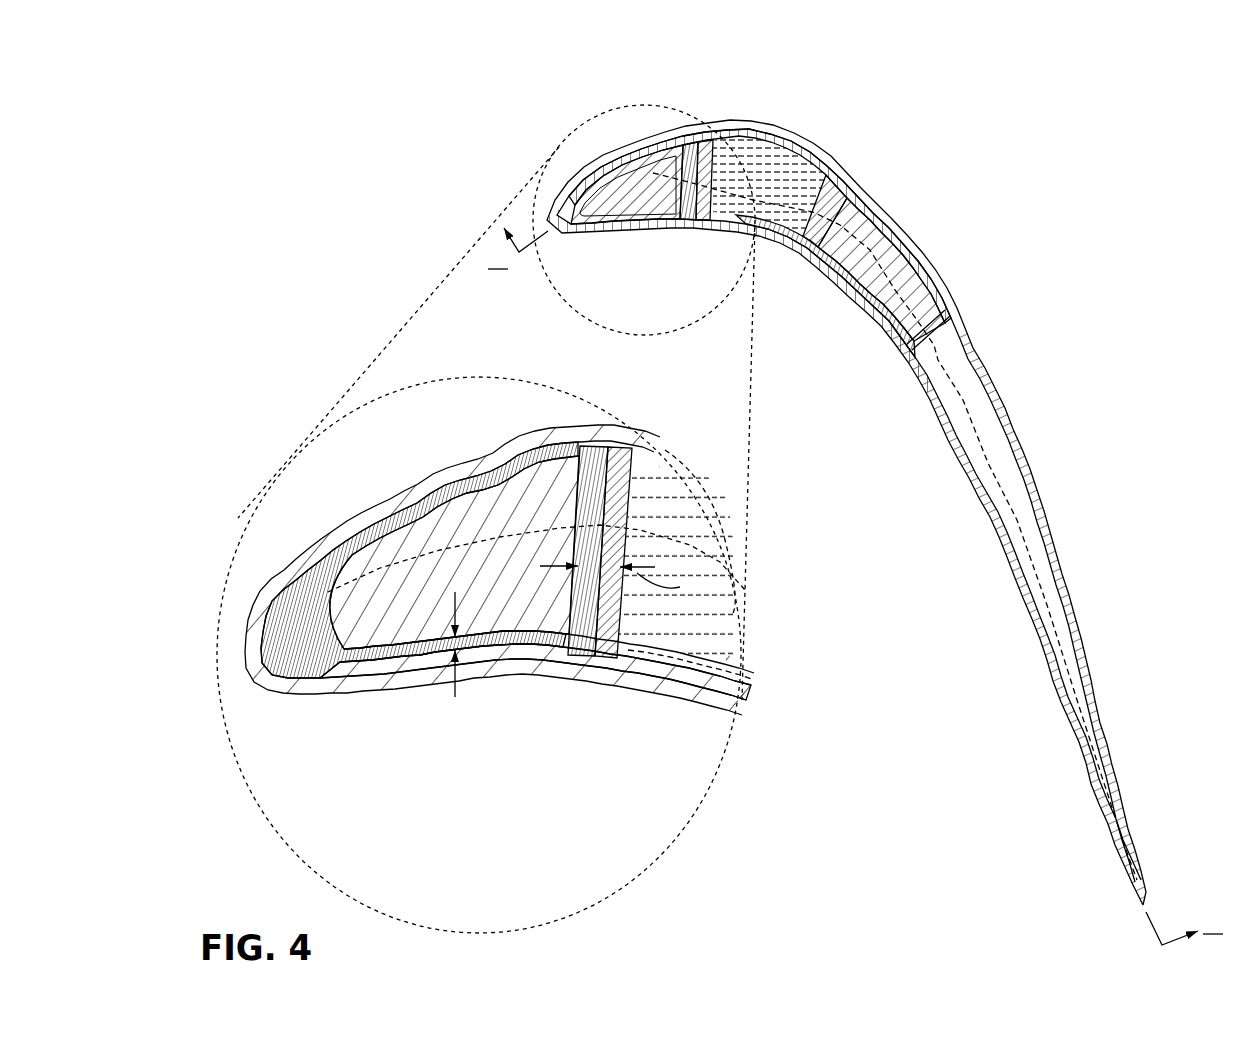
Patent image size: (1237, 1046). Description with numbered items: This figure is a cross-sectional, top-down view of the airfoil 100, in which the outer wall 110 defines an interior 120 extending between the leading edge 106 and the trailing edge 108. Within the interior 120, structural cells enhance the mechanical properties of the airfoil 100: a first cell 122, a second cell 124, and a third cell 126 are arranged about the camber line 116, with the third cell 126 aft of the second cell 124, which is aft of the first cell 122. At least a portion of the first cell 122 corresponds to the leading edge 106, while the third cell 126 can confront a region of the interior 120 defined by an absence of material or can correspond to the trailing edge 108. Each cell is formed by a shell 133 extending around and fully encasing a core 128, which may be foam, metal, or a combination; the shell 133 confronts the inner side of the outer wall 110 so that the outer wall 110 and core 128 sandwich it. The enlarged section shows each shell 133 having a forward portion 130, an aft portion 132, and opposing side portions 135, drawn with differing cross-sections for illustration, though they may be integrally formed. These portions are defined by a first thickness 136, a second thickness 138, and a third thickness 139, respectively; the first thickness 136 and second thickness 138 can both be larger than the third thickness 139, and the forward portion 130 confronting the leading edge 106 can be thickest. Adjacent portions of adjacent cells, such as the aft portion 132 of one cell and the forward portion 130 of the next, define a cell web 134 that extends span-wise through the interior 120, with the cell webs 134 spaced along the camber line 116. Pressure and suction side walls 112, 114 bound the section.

The airfoil 100 is at (346, 236).
The leading edge 106 is at (551, 233).
The trailing edge 108 is at (1143, 912).
The outer wall 110 is at (1058, 518).
The pressure side wall 112 is at (946, 434).
The suction side wall 114 is at (1000, 397).
The camber line 116 is at (1102, 690).
The interior 120 is at (956, 368).
The first cell 122 is at (617, 233).
The second cell 124 is at (733, 240).
The third cell 126 is at (862, 316).
The core 128 is at (763, 125).
The forward portion 130 is at (683, 540).
The aft portion 132 is at (566, 658).
The shell 133 is at (647, 131).
The cell web 134 is at (700, 124).
The opposing side portions 135 is at (476, 496).
The first thickness 136 is at (289, 585).
The second thickness 138 is at (700, 580).
The third thickness 139 is at (460, 457).